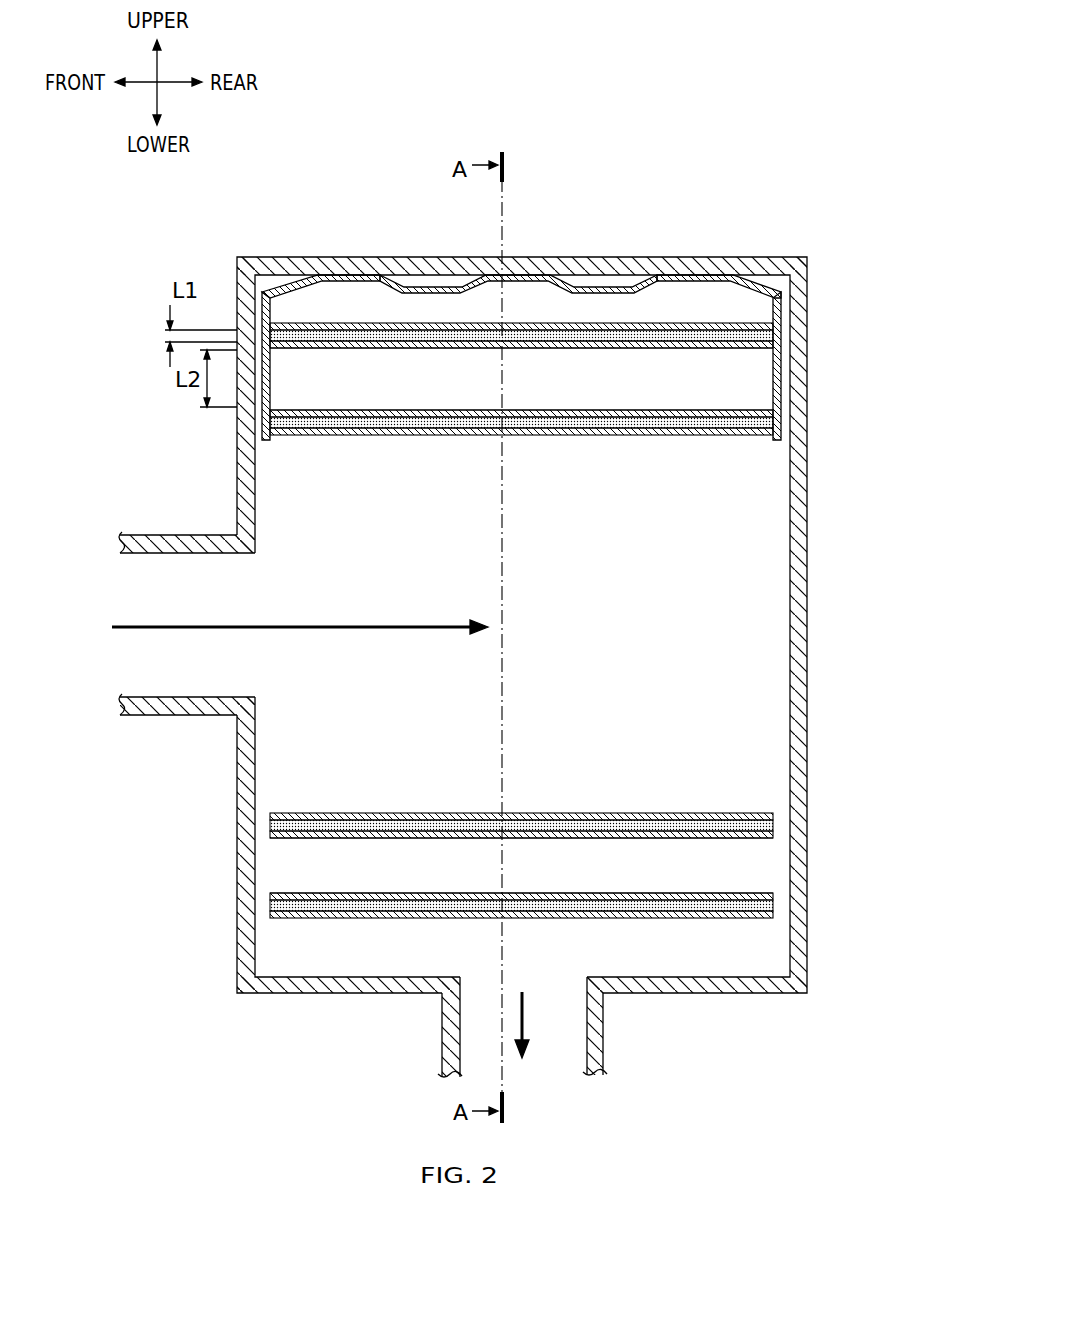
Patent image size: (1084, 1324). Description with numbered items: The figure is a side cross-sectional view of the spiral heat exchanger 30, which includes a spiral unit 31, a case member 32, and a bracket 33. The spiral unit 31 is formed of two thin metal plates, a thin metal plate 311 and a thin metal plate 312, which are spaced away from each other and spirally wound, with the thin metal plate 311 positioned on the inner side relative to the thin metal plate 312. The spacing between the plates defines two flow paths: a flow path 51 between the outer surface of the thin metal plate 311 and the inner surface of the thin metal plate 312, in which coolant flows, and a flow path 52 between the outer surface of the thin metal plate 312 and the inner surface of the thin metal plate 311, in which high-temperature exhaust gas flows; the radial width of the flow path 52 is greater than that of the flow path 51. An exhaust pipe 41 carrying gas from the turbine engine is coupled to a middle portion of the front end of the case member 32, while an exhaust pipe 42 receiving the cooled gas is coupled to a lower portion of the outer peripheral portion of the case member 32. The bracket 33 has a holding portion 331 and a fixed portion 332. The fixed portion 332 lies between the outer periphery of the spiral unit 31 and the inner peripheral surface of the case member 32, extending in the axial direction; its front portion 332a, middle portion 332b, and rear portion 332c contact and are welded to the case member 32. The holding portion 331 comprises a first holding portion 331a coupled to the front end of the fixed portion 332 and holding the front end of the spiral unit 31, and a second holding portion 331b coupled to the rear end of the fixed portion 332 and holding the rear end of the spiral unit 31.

The spiral heat exchanger 30 is at (895, 523).
The spiral unit 31 is at (762, 814).
The case member 32 is at (808, 634).
The bracket 33 is at (765, 258).
The exhaust pipe 41 is at (176, 534).
The exhaust pipe 42 is at (606, 1030).
The flow path 51 is at (752, 326).
The flow path 52 is at (752, 380).
The thin metal plate 311 is at (620, 350).
The thin metal plate 312 is at (540, 350).
The holding portion 331 is at (523, 368).
The first holding portion 331a is at (262, 395).
The second holding portion 331b is at (779, 345).
The fixed portion 332 is at (618, 287).
The front portion 332a is at (352, 258).
The middle portion 332b is at (537, 274).
The rear portion 332c is at (700, 280).